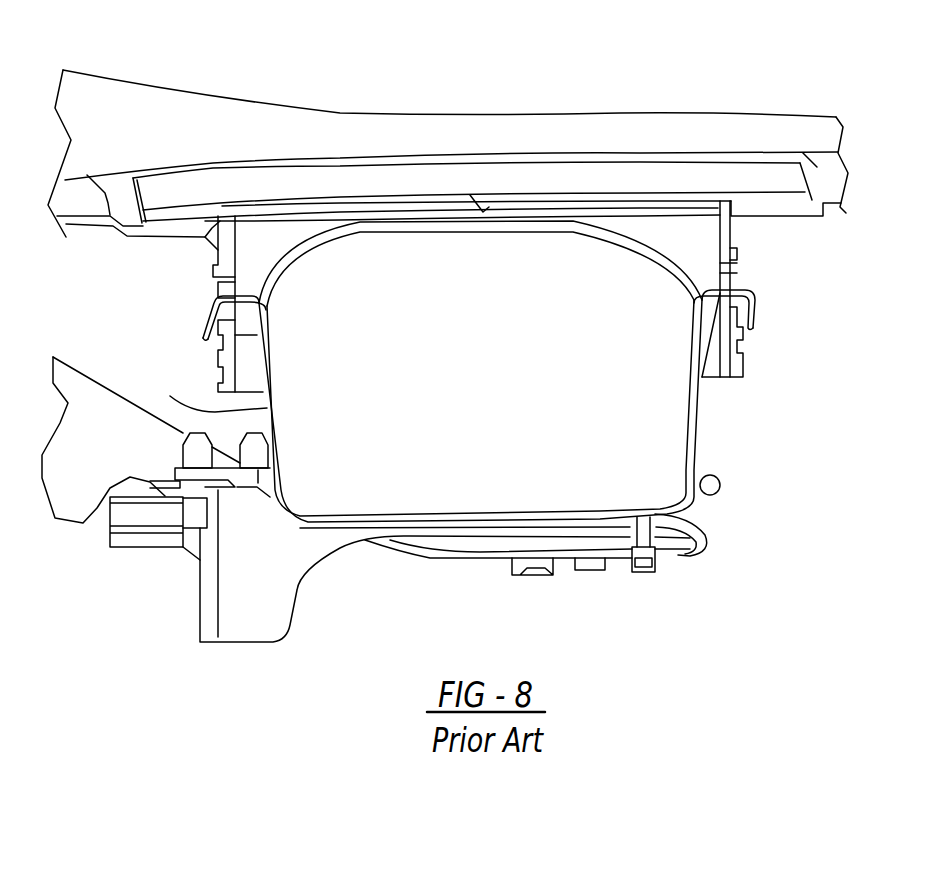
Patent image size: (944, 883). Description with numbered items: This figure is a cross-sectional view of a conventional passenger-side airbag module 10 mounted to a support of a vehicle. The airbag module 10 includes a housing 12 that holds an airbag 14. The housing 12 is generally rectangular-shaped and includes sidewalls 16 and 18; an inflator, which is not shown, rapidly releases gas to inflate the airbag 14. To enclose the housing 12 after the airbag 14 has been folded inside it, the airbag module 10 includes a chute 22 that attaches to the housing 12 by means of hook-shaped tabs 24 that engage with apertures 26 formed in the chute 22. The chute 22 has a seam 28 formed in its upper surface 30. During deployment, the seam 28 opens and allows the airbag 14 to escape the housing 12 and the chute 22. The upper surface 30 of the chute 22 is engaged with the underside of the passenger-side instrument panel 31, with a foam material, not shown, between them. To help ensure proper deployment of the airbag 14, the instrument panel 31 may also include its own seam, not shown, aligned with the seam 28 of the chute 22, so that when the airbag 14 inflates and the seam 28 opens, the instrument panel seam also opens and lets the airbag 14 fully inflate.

The passenger-side airbag module 10 is at (749, 576).
The housing 12 is at (696, 435).
The airbag 14 is at (489, 375).
The sidewall 16 is at (695, 410).
The sidewall 18 is at (172, 396).
The chute 22 is at (218, 253).
The hook-shaped tabs 24 is at (205, 334).
The apertures 26 is at (731, 277).
The seam 28 is at (483, 212).
The upper surface 30 is at (580, 193).
The passenger-side instrument panel 31 is at (363, 130).